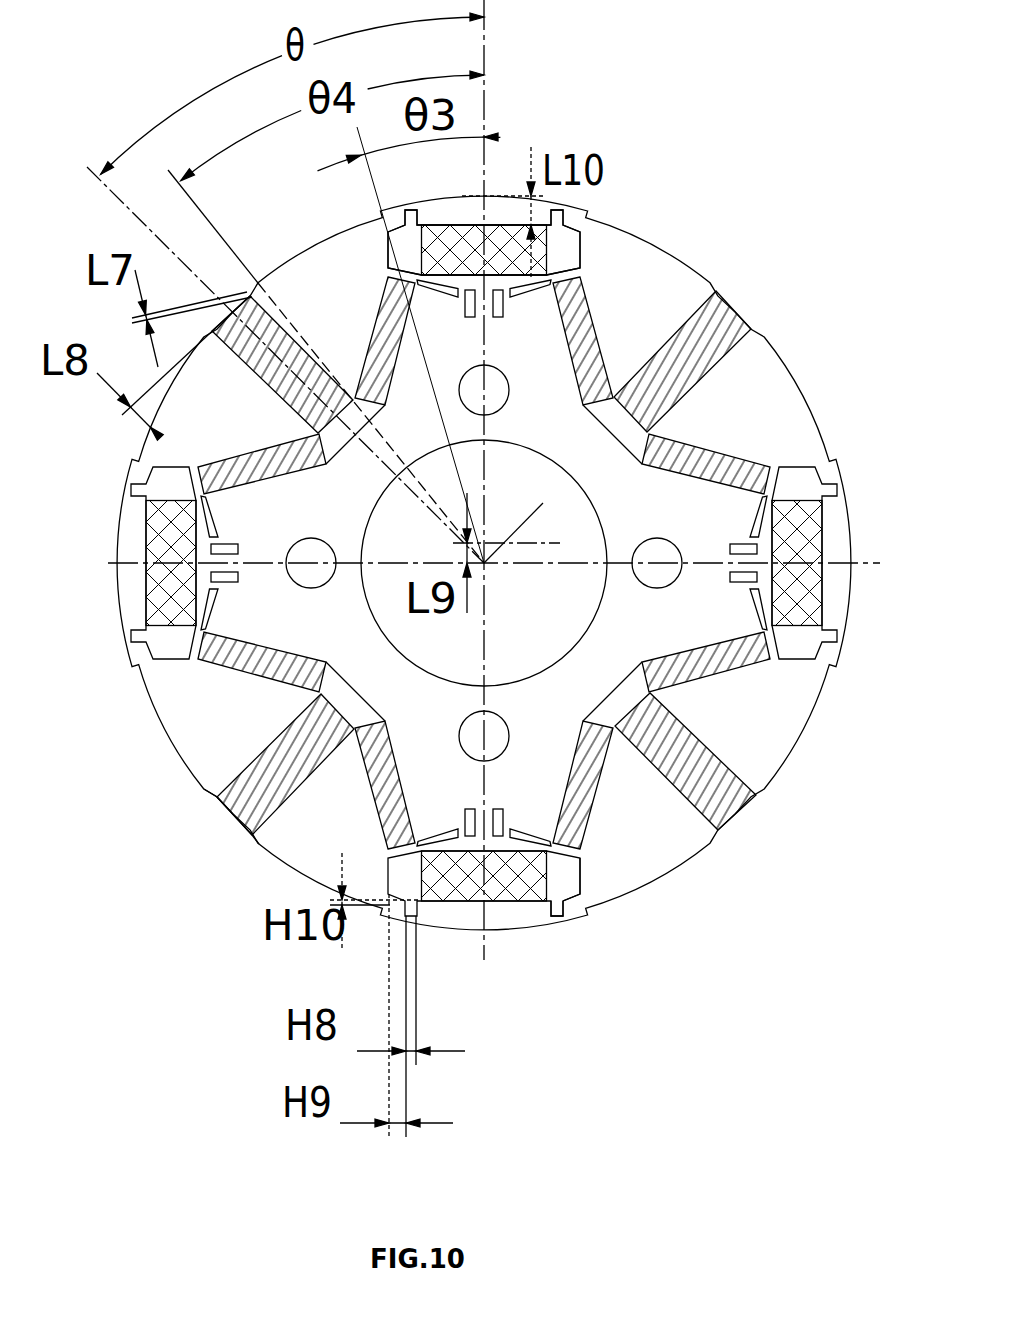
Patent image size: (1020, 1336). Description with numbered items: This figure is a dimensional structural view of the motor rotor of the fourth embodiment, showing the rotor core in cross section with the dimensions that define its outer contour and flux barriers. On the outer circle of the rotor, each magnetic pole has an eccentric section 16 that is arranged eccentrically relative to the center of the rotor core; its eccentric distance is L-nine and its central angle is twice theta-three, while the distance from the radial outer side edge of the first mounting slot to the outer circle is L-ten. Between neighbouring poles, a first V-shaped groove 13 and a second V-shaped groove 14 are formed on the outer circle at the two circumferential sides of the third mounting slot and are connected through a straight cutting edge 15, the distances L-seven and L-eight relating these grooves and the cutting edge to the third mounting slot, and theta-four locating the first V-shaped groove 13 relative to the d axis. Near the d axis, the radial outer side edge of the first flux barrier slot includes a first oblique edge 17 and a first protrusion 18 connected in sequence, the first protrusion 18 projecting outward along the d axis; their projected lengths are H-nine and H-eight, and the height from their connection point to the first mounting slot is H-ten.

The first V-shaped groove 13 is at (210, 790).
The second V-shaped groove 14 is at (253, 842).
The straight cutting edge 15 is at (227, 817).
The eccentric section 16 is at (497, 207).
The first oblique edge 17 is at (570, 900).
The first protrusion 18 is at (557, 920).